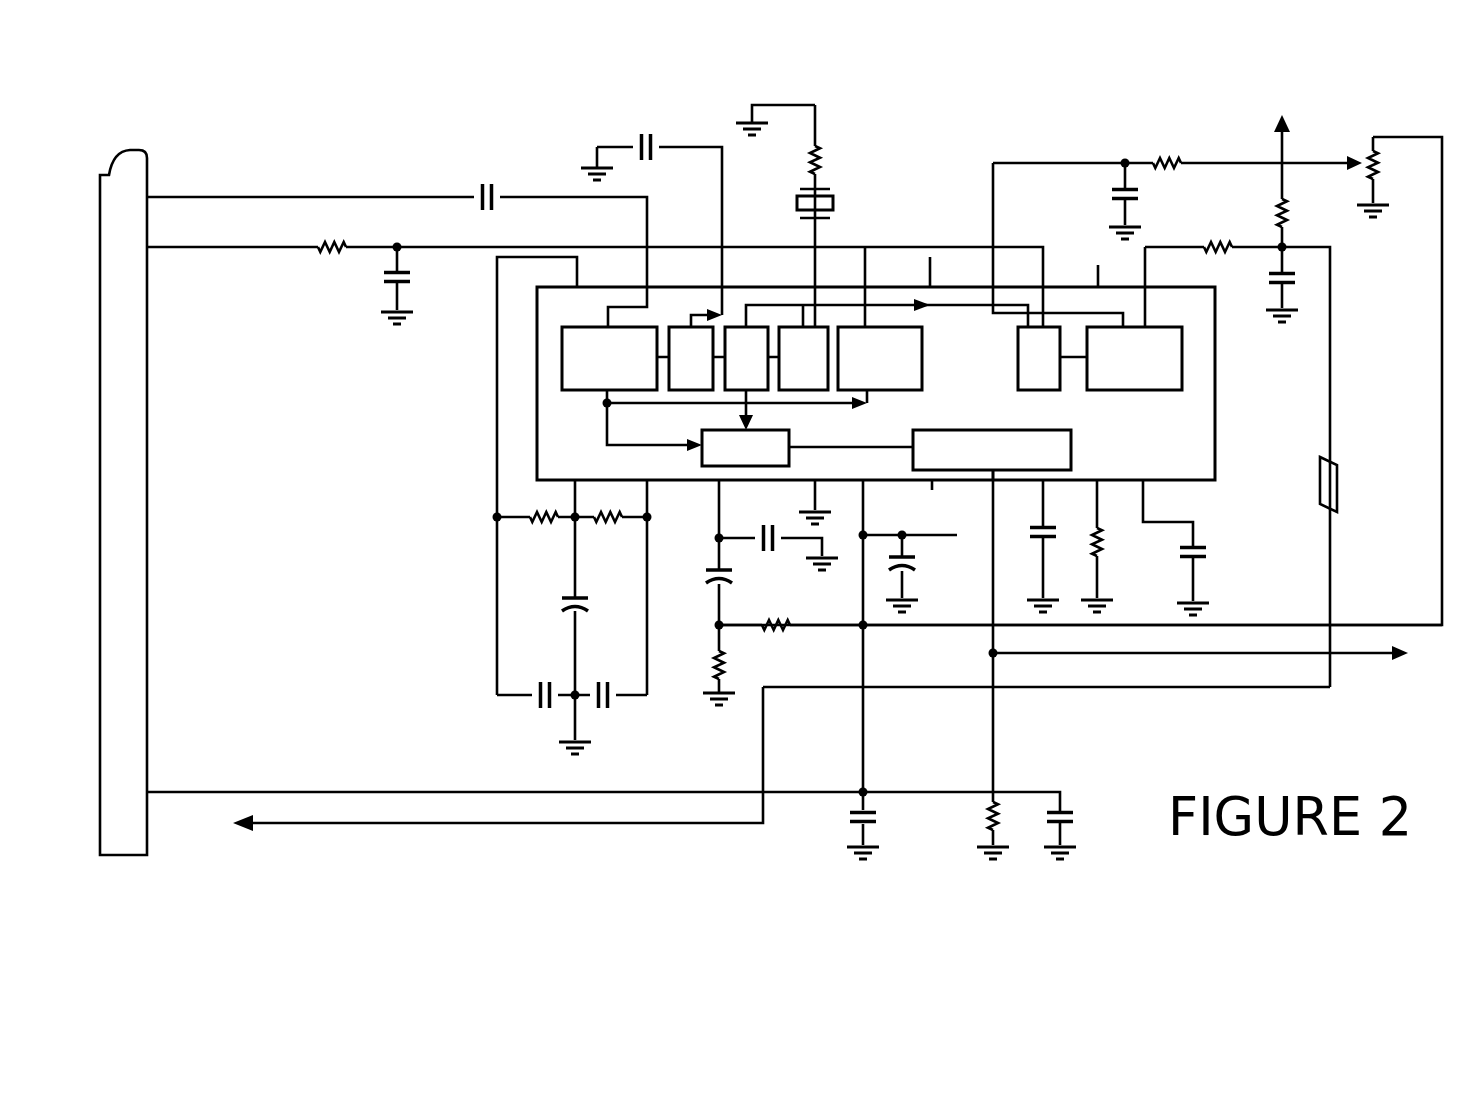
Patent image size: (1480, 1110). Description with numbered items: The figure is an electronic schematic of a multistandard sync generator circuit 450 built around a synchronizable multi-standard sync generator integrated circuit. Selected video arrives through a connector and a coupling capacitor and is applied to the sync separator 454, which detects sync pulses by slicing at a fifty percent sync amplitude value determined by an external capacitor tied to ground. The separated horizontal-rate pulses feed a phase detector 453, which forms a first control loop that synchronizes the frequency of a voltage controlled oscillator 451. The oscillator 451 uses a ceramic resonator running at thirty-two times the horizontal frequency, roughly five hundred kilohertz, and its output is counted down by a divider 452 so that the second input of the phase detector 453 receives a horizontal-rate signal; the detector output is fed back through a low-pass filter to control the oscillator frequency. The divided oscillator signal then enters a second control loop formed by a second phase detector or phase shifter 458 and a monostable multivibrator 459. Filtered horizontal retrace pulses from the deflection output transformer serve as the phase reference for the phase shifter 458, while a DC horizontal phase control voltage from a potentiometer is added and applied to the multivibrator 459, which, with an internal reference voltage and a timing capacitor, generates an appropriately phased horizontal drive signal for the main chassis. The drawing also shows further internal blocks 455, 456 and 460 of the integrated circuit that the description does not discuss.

The sync processing circuit 450 is at (309, 491).
The voltage controlled oscillator 451 is at (819, 382).
The divider 452 is at (762, 382).
The phase detector 453 is at (706, 382).
The sync separator 454 is at (626, 382).
The vertical frequency divider 455 is at (779, 459).
The 50/60 mode detector 456 is at (1063, 461).
The second phase detector 458 is at (1054, 382).
The monostable multivibrator 459 is at (1150, 382).
The vertical reset circuit 460 is at (895, 382).